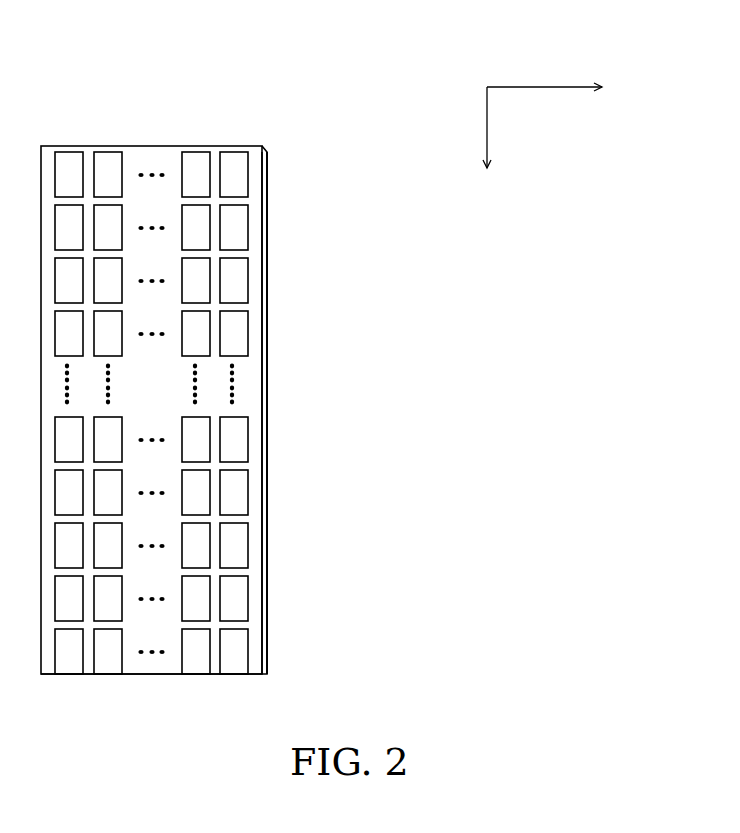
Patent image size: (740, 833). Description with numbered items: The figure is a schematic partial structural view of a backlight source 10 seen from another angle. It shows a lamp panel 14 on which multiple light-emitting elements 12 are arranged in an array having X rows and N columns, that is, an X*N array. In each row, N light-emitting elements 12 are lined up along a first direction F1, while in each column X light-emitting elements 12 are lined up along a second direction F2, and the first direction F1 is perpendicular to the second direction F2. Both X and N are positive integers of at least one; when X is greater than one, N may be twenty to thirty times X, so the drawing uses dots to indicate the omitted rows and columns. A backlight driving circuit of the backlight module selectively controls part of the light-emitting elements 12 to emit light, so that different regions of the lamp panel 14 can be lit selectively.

The backlight source 10 is at (332, 42).
The light-emitting elements 12 is at (232, 178).
The lamp panel 14 is at (258, 230).
The number of rows X is at (288, 413).
The number of columns N is at (151, 701).
The first direction F1 is at (566, 87).
The second direction F2 is at (511, 138).